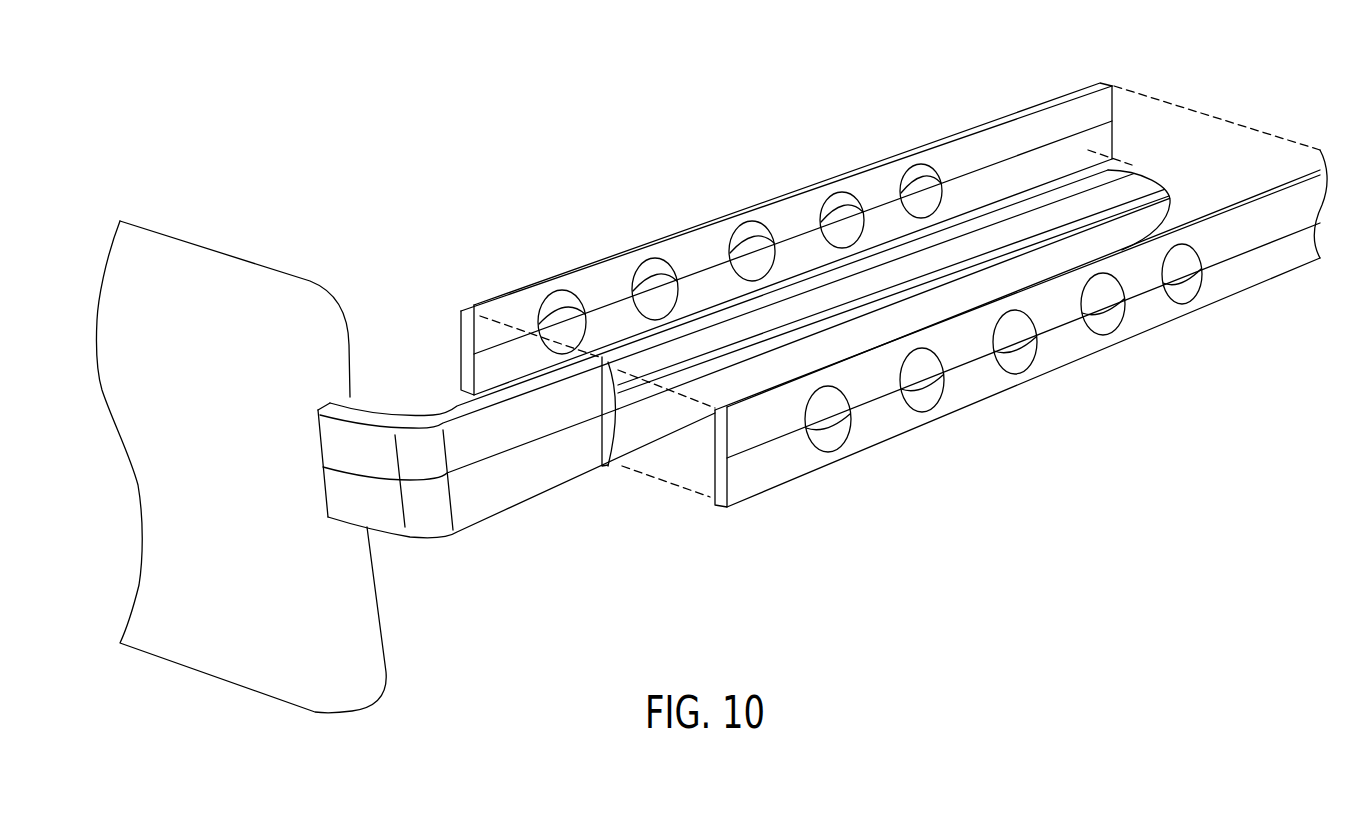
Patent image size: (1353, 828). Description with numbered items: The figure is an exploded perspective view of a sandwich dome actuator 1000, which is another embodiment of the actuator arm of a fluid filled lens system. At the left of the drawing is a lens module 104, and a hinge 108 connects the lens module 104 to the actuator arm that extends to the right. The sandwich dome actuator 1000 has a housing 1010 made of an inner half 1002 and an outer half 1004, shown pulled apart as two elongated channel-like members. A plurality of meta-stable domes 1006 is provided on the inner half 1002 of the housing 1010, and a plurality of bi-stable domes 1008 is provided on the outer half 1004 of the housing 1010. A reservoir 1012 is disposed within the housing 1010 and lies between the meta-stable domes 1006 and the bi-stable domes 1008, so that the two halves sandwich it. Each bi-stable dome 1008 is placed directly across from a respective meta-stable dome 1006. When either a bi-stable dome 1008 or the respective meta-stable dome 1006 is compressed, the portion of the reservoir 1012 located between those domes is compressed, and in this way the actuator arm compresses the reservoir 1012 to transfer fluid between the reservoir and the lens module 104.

The sandwich dome actuator 1000 is at (197, 149).
The lens module 104 is at (197, 653).
The hinge 108 is at (473, 513).
The inner half 1002 is at (1003, 122).
The outer half 1004 is at (707, 494).
The meta-stable domes 1006 is at (557, 291).
The bi-stable domes 1008 is at (833, 437).
The housing 1010 is at (1115, 115).
The reservoir 1012 is at (643, 418).